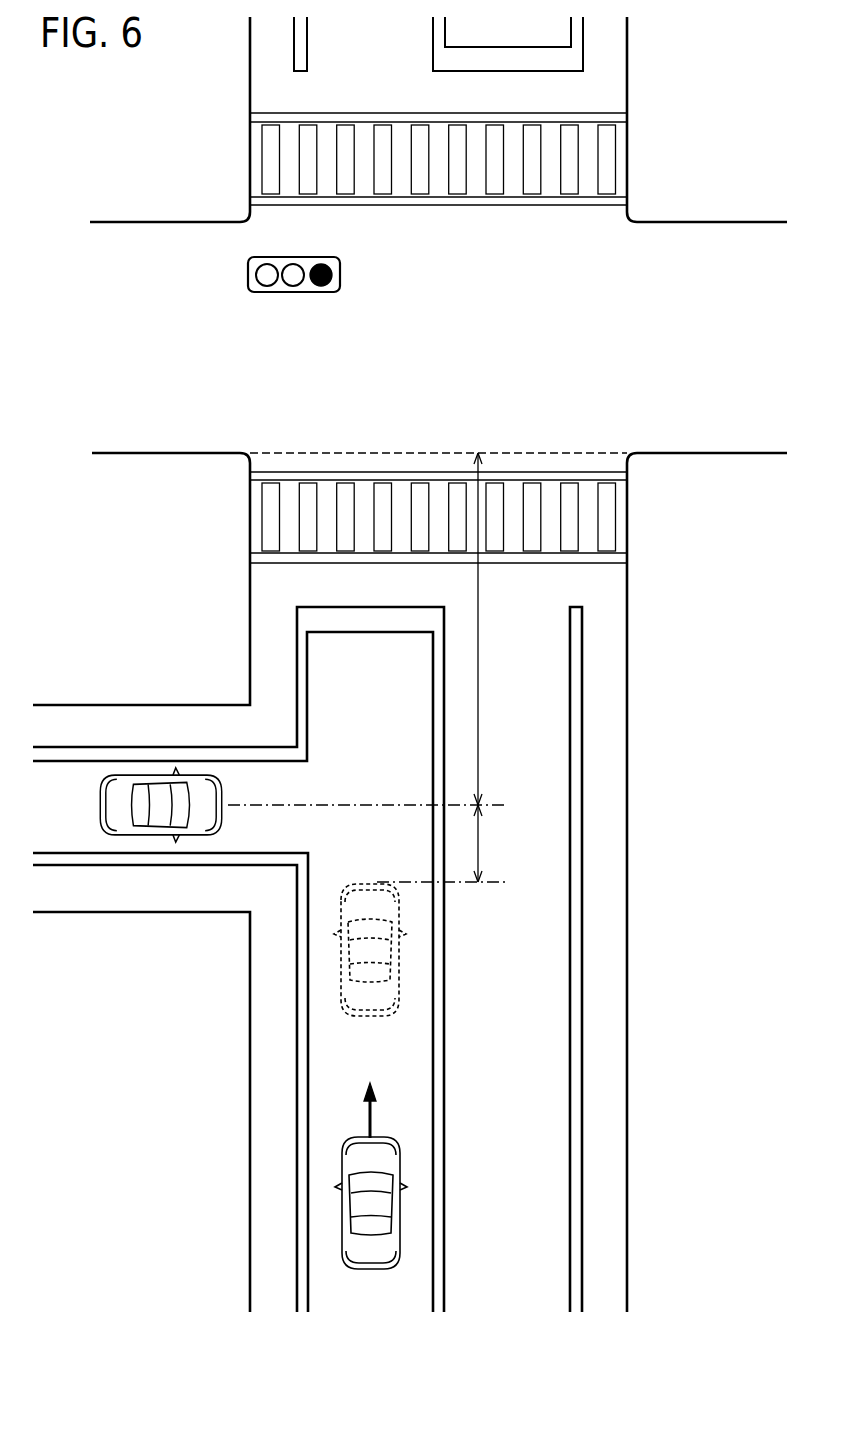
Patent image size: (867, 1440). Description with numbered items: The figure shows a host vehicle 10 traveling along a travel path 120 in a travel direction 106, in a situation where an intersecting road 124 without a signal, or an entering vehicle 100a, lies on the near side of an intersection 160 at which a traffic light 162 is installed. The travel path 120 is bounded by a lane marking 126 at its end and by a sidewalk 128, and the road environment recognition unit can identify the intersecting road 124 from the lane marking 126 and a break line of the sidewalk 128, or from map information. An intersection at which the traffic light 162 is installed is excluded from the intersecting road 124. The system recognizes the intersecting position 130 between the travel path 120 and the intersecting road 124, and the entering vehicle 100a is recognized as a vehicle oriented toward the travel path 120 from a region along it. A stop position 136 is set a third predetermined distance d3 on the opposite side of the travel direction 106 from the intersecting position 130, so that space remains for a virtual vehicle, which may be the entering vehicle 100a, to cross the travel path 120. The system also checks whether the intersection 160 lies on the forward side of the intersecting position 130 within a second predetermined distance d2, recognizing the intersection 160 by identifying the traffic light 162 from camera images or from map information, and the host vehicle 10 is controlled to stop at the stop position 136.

The host vehicle 10 is at (400, 973).
The entering vehicle 100a is at (145, 776).
The travel direction 106 is at (373, 1118).
The travel path 120 is at (330, 1098).
The intersecting road 124 is at (75, 837).
The lane marking 126 is at (294, 1158).
The sidewalk 128 is at (270, 1048).
The intersecting position 130 is at (308, 804).
The stop position 136 is at (493, 885).
The intersection 160 is at (228, 160).
The traffic light 162 is at (247, 275).
The second predetermined distance d2 is at (491, 629).
The third predetermined distance d3 is at (491, 843).